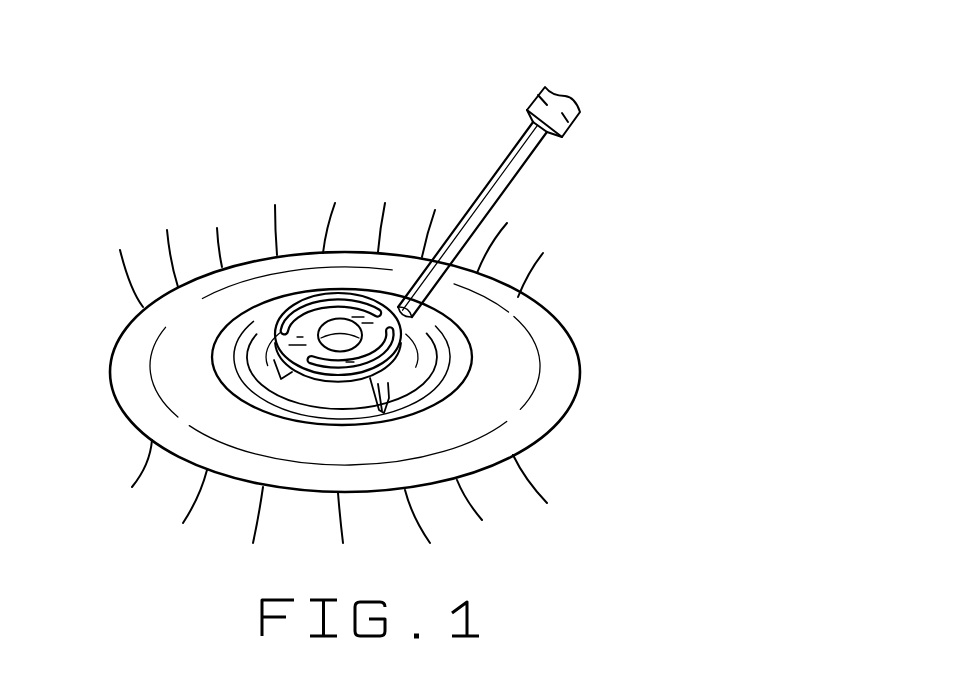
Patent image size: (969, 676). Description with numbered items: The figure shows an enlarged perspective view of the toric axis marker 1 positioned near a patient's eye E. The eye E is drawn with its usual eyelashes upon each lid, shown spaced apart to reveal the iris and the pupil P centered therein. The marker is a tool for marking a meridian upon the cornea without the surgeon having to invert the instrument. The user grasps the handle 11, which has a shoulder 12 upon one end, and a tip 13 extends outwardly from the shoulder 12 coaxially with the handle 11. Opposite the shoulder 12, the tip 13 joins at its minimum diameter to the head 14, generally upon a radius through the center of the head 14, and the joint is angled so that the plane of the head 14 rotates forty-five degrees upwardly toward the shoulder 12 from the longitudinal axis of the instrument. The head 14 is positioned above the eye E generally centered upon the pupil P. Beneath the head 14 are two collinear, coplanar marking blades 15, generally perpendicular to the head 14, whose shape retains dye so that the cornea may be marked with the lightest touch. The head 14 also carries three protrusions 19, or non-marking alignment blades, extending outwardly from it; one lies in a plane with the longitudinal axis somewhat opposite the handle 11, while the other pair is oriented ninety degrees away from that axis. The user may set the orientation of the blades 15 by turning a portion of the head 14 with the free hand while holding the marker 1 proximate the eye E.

The eye 1 is at (238, 333).
The eye E is at (125, 337).
The pupil P is at (268, 356).
The handle 11 is at (556, 92).
The shoulder 12 is at (563, 138).
The tip 13 is at (496, 207).
The head 14 is at (400, 346).
The marking blades 15 is at (388, 402).
The protrusions 19 is at (283, 383).